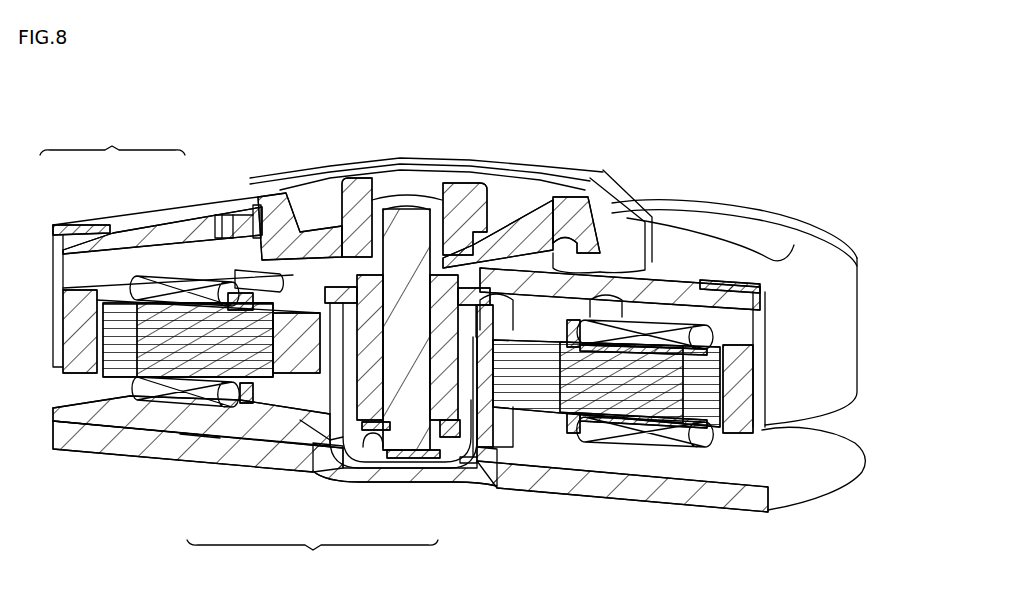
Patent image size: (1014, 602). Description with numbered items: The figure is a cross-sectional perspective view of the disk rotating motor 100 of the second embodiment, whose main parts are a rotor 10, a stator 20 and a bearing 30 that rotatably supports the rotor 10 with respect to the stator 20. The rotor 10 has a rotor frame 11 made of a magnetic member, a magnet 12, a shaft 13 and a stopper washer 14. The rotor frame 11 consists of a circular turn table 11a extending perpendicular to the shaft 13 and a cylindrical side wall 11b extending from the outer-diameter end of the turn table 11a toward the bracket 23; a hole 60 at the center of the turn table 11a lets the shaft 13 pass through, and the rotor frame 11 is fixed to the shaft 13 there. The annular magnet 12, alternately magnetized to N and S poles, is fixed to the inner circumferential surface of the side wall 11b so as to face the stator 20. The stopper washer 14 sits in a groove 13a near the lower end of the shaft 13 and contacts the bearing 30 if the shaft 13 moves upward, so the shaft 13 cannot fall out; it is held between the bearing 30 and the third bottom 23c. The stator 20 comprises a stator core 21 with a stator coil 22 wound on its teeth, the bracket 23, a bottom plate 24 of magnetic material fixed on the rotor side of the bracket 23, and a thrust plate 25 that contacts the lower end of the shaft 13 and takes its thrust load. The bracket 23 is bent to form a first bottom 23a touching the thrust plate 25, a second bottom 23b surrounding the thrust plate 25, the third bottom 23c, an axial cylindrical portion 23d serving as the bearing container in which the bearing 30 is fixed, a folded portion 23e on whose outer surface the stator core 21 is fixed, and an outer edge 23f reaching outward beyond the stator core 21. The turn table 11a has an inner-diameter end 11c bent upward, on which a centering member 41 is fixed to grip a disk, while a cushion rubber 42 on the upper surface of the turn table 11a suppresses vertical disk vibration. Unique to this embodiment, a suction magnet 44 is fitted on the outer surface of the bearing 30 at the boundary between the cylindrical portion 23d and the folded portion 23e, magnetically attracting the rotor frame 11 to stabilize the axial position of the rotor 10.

The motor 100 is at (654, 163).
The rotor 10 is at (851, 302).
The rotor frame 11 is at (112, 138).
The turn table 11a is at (130, 240).
The side wall 11b is at (50, 267).
The inner-diameter end 11c is at (215, 220).
The magnet 12 is at (737, 413).
The shaft 13 is at (413, 222).
The groove 13a is at (465, 478).
The stopper washer 14 is at (474, 452).
The stator 20 is at (728, 385).
The stator core 21 is at (603, 450).
The stator coil 22 is at (660, 437).
The bracket 23 is at (690, 497).
The first bottom 23a is at (410, 473).
The second bottom 23b is at (360, 447).
The third bottom 23c is at (345, 455).
The cylindrical portion 23d is at (333, 437).
The folded portion 23e is at (283, 435).
The outer edge 23f is at (200, 452).
The bottom plate 24 is at (90, 418).
The thrust plate 25 is at (427, 487).
The bearing 30 is at (447, 290).
The centering member 41 is at (551, 217).
The cushion rubber 42 is at (787, 227).
The suction magnet 44 is at (476, 302).
The hole 60 is at (393, 190).